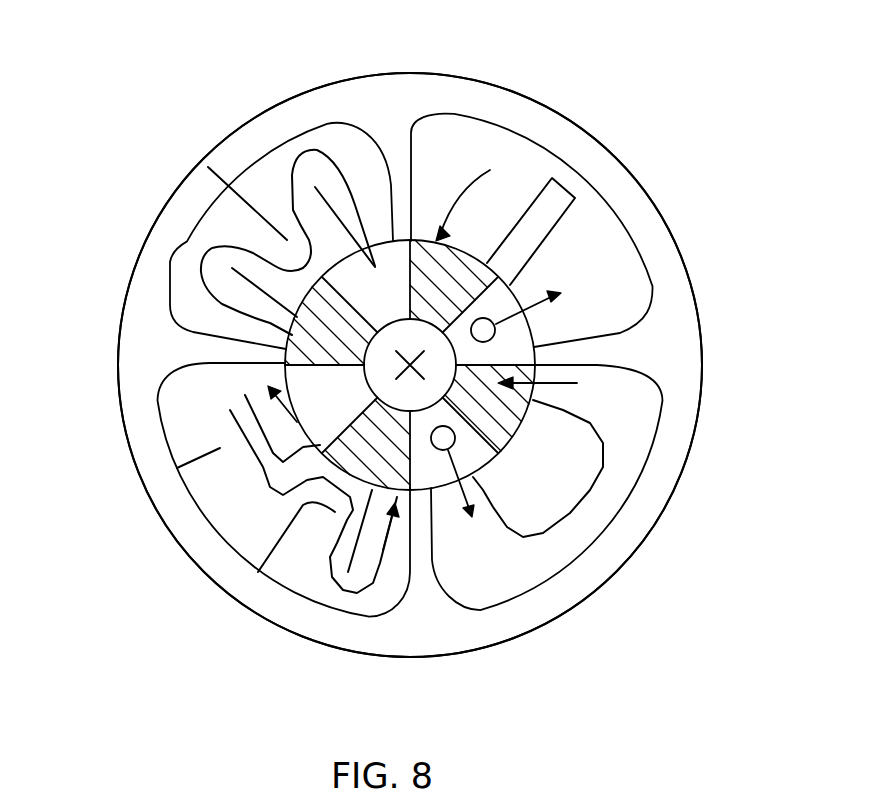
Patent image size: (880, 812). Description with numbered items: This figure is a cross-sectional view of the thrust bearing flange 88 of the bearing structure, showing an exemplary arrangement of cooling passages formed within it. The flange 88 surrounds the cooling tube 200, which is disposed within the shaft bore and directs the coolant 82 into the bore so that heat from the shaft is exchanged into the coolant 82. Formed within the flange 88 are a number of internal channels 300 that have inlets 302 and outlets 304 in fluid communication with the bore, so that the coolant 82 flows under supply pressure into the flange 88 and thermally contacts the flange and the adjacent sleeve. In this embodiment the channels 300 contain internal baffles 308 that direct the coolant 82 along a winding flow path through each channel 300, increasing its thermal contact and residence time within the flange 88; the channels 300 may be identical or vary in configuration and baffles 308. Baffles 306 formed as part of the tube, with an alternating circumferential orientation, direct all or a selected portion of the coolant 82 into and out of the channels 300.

The thrust bearing flange 88 is at (697, 226).
The coolant 82 is at (167, 263).
The cooling tube 200 is at (283, 348).
The internal channels 300 is at (590, 210).
The inlets 302 is at (380, 187).
The outlets 304 is at (478, 258).
The baffles 306 is at (398, 183).
The internal baffles 308 is at (277, 188).